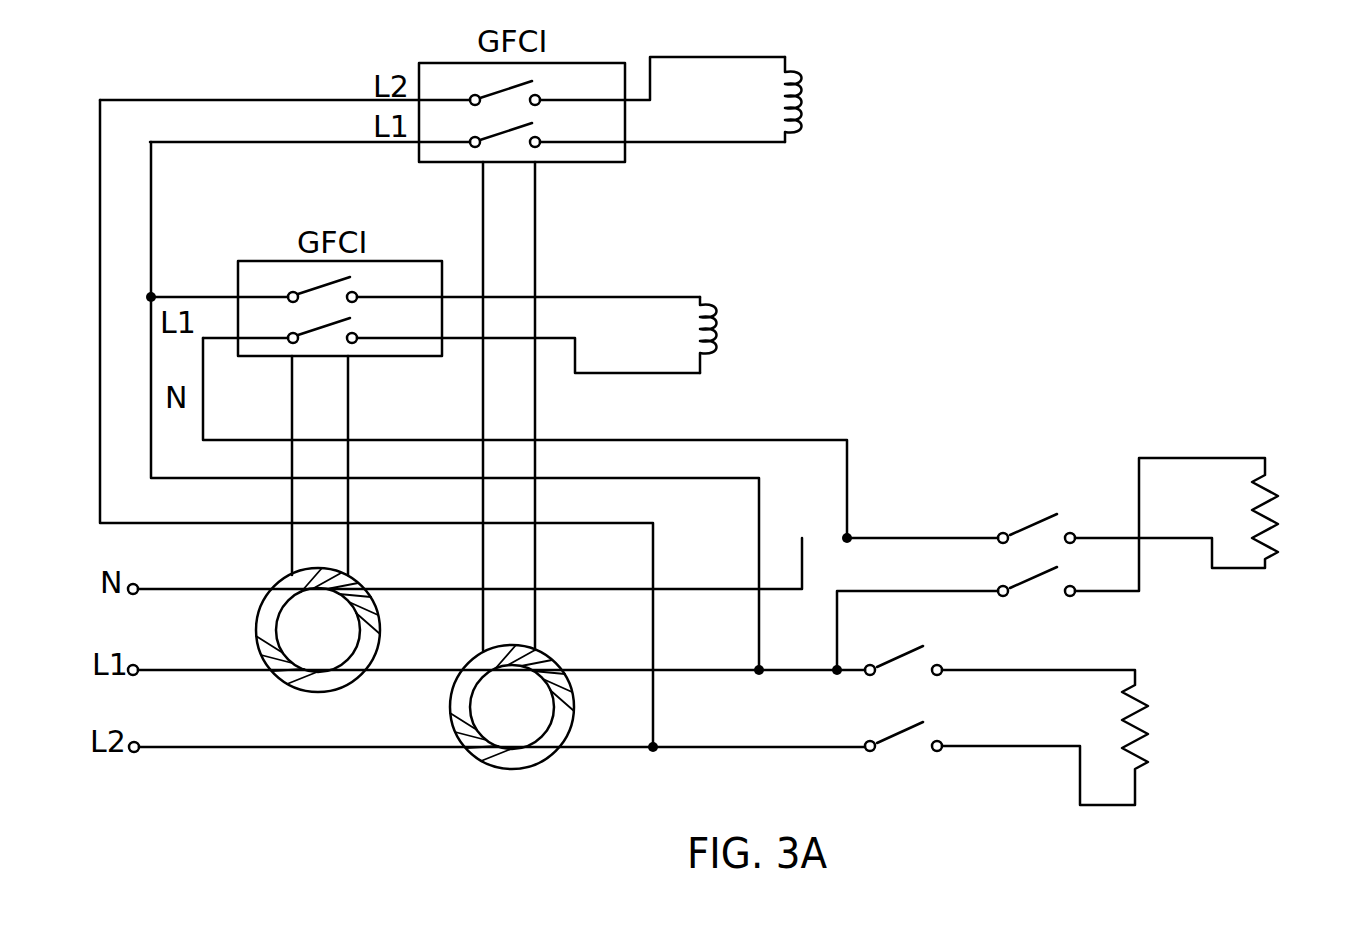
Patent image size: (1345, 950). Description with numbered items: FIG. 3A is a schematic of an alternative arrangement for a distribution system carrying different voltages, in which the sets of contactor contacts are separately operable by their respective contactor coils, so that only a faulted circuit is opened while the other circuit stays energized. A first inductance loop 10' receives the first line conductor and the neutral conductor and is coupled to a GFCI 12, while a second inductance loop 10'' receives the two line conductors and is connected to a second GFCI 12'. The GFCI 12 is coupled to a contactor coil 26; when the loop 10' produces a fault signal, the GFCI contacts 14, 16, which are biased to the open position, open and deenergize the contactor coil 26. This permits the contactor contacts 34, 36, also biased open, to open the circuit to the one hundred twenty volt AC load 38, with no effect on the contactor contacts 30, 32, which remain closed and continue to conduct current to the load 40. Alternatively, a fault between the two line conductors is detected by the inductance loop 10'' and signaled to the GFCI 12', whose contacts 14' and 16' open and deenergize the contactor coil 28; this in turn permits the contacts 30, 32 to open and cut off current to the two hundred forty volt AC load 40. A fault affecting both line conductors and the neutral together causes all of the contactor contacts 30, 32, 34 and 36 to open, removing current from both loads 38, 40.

The first inductance loop 10' is at (346, 630).
The second inductance loop 10'' is at (543, 707).
The GFCI 12 is at (357, 281).
The second GFCI 12' is at (533, 86).
The GFCI contact 14 is at (302, 282).
The GFCI contact 14' is at (481, 84).
The GFCI contact 16 is at (302, 323).
The GFCI contact 16' is at (481, 127).
The contactor coil 26 is at (715, 325).
The contactor coil 28 is at (800, 88).
The contactor contact 30 is at (883, 663).
The contactor contact 32 is at (883, 739).
The contactor contact 34 is at (1033, 522).
The contactor contact 36 is at (1018, 585).
The 120 Volt AC load 38 is at (1278, 505).
The 240 V AC load 40 is at (1147, 718).